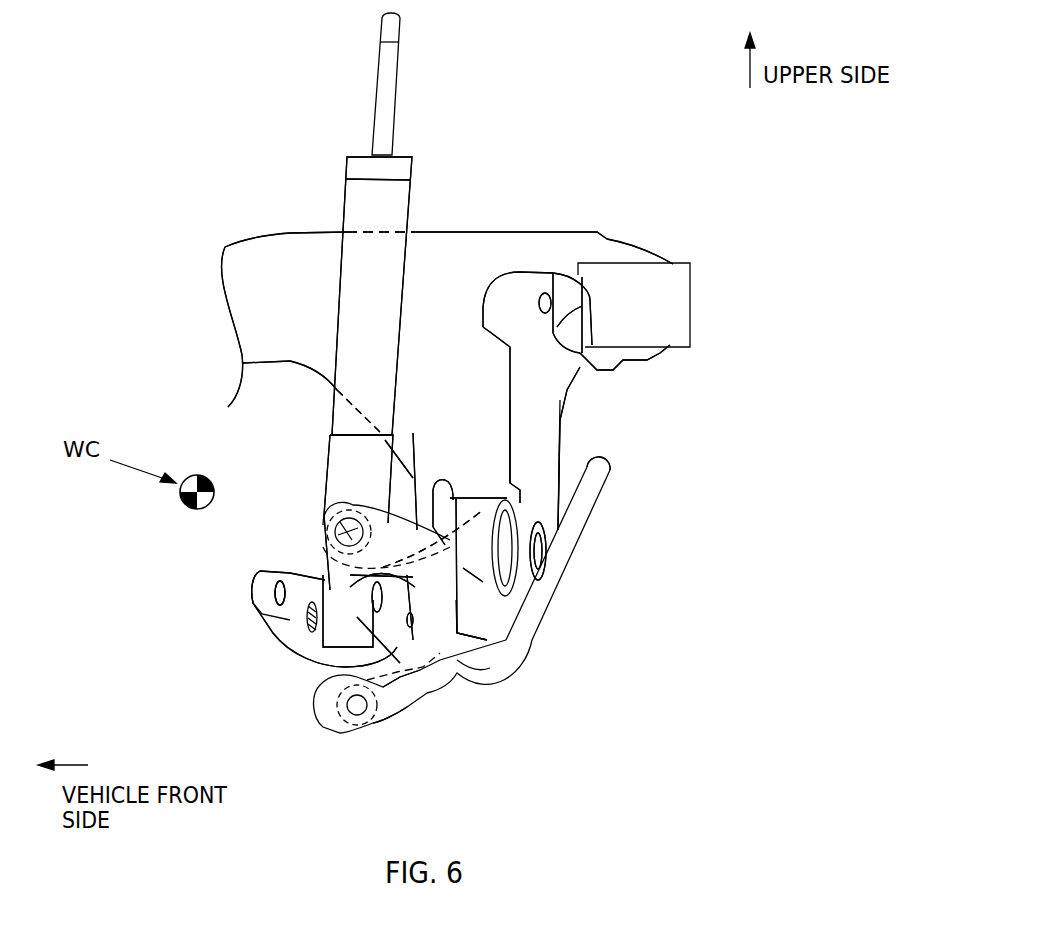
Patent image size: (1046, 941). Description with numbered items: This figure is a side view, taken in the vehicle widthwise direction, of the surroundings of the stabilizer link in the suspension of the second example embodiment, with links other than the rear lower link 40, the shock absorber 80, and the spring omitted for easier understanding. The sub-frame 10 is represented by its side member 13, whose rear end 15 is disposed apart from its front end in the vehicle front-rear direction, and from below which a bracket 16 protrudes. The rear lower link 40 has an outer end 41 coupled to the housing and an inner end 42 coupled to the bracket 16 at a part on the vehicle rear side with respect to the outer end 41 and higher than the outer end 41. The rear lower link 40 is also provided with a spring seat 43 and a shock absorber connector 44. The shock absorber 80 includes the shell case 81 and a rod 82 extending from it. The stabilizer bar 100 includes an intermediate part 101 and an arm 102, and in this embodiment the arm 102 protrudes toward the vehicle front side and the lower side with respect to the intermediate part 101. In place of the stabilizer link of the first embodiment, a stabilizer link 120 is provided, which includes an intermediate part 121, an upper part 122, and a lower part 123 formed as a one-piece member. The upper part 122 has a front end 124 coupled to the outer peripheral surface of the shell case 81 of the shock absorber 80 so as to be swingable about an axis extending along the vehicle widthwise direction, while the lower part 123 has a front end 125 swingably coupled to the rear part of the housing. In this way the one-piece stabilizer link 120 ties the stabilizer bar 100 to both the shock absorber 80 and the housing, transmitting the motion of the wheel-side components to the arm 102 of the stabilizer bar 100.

The rod 82 is at (373, 108).
The shock absorber 80 is at (316, 307).
The shell case 81 is at (340, 340).
The sub-frame 10 is at (288, 242).
The side member 13 is at (447, 449).
The rear end 15 is at (690, 292).
The bracket 16 is at (560, 448).
The front end 124 is at (322, 533).
The upper part 122 is at (417, 530).
The inner end 42 is at (507, 543).
The rear lower link 40 is at (483, 582).
The spring seat 43 is at (538, 551).
The stabilizer bar 100 is at (572, 593).
The intermediate part 101 is at (608, 470).
The intermediate part 121 is at (445, 630).
The arm 102 is at (475, 672).
The stabilizer link 120 is at (446, 724).
The lower part 123 is at (403, 710).
The front end 125 is at (347, 723).
The outer end 41 is at (258, 590).
The shock absorber connector 44 is at (312, 617).